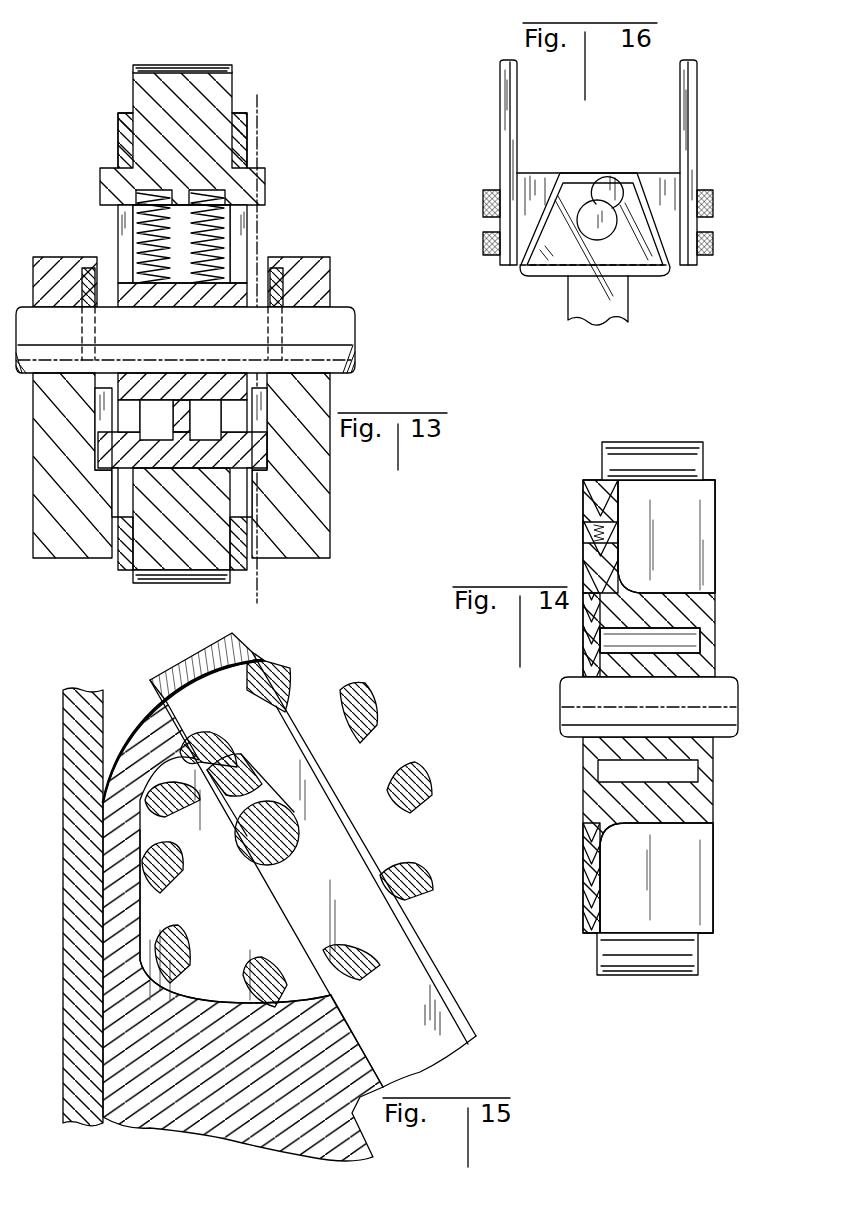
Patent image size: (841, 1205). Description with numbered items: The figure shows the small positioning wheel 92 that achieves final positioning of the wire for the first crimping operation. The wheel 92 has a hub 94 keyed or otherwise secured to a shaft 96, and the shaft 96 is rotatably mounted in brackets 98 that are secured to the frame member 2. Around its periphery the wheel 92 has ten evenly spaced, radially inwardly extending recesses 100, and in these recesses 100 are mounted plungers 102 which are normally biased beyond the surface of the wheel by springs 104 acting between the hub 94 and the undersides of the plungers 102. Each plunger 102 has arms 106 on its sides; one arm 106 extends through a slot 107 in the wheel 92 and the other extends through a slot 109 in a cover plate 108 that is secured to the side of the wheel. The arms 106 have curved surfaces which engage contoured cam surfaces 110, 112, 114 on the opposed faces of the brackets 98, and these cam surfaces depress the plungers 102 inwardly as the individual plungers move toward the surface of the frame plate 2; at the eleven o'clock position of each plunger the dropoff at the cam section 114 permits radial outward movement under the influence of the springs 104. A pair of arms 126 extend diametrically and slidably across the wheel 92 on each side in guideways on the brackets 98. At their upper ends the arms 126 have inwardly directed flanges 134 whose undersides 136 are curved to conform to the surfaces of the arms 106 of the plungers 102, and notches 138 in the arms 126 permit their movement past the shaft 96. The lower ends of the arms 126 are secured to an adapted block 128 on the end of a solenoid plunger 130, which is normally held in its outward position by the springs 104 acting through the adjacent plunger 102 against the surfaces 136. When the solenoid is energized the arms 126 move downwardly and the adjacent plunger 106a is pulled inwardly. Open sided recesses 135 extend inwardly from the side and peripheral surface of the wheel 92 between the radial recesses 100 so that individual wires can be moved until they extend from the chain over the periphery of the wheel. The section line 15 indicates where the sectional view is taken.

In FIG. 15, the frame member 2 is at (65, 1030).
In FIG. 13, the section line 15- 15 is at (257, 95).
In FIG. 13, the positioning wheel 92 is at (240, 570).
In FIG. 14, the positioning wheel 92 is at (615, 800).
In FIG. 13, the hub 94 is at (170, 300).
In FIG. 14, the hub 94 is at (596, 662).
In FIG. 13, the shaft 96 is at (345, 327).
In FIG. 14, the shaft 96 is at (585, 718).
In FIG. 15, the shaft 96 is at (278, 862).
In FIG. 13, the brackets 98 is at (322, 528).
In FIG. 15, the brackets 98 is at (165, 1117).
In FIG. 13, the recesses 100 is at (138, 141).
In FIG. 13, the plungers 102 is at (133, 80).
In FIG. 14, the plungers 102 is at (618, 447).
In FIG. 13, the springs 104 is at (175, 222).
In FIG. 15, the arms 106 is at (370, 700).
In FIG. 15, the adjacent plunger 106a is at (283, 668).
In FIG. 13, the slot 107 is at (245, 244).
In FIG. 13, the cover plate 108 is at (118, 118).
In FIG. 14, the cover plate 108 is at (590, 868).
In FIG. 13, the slot 109 is at (125, 244).
In FIG. 15, the cam surface 110 is at (238, 1000).
In FIG. 15, the cam surface 112 is at (146, 915).
In FIG. 13, the cam section 114 is at (99, 410).
In FIG. 15, the cam section 114 is at (176, 756).
In FIG. 13, the arms 126 is at (84, 278).
In FIG. 16, the arms 126 is at (505, 115).
In FIG. 15, the arms 126 is at (420, 1015).
In FIG. 16, the adapted block 128 is at (543, 183).
In FIG. 16, the solenoid plunger 130 is at (596, 318).
In FIG. 15, the flanges 134 is at (212, 646).
In FIG. 14, the open sided recesses 135 is at (700, 522).
In FIG. 15, the undersides 136 is at (203, 672).
In FIG. 15, the notches 138 is at (260, 786).